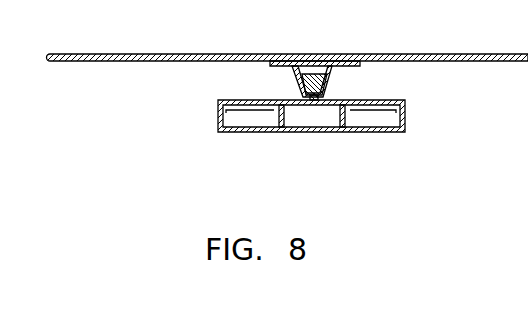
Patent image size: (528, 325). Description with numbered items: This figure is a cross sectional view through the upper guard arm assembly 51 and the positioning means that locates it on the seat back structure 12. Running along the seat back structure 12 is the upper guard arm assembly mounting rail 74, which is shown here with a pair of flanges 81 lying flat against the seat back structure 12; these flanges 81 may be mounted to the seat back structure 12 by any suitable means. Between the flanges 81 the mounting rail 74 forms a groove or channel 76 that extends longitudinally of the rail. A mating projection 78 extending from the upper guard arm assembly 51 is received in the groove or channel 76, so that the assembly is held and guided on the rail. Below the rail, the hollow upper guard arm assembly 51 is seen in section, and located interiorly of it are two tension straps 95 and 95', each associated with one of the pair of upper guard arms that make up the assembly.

The seat back structure 12 is at (433, 51).
The flanges 81 is at (289, 53).
The upper guard arm assembly mounting rail 74 is at (337, 80).
The groove or channel 76 is at (310, 81).
The mating projection 78 is at (310, 98).
The upper guard arm assembly 51 is at (422, 125).
The tension strap 95' is at (246, 141).
The tension strap 95 is at (383, 141).